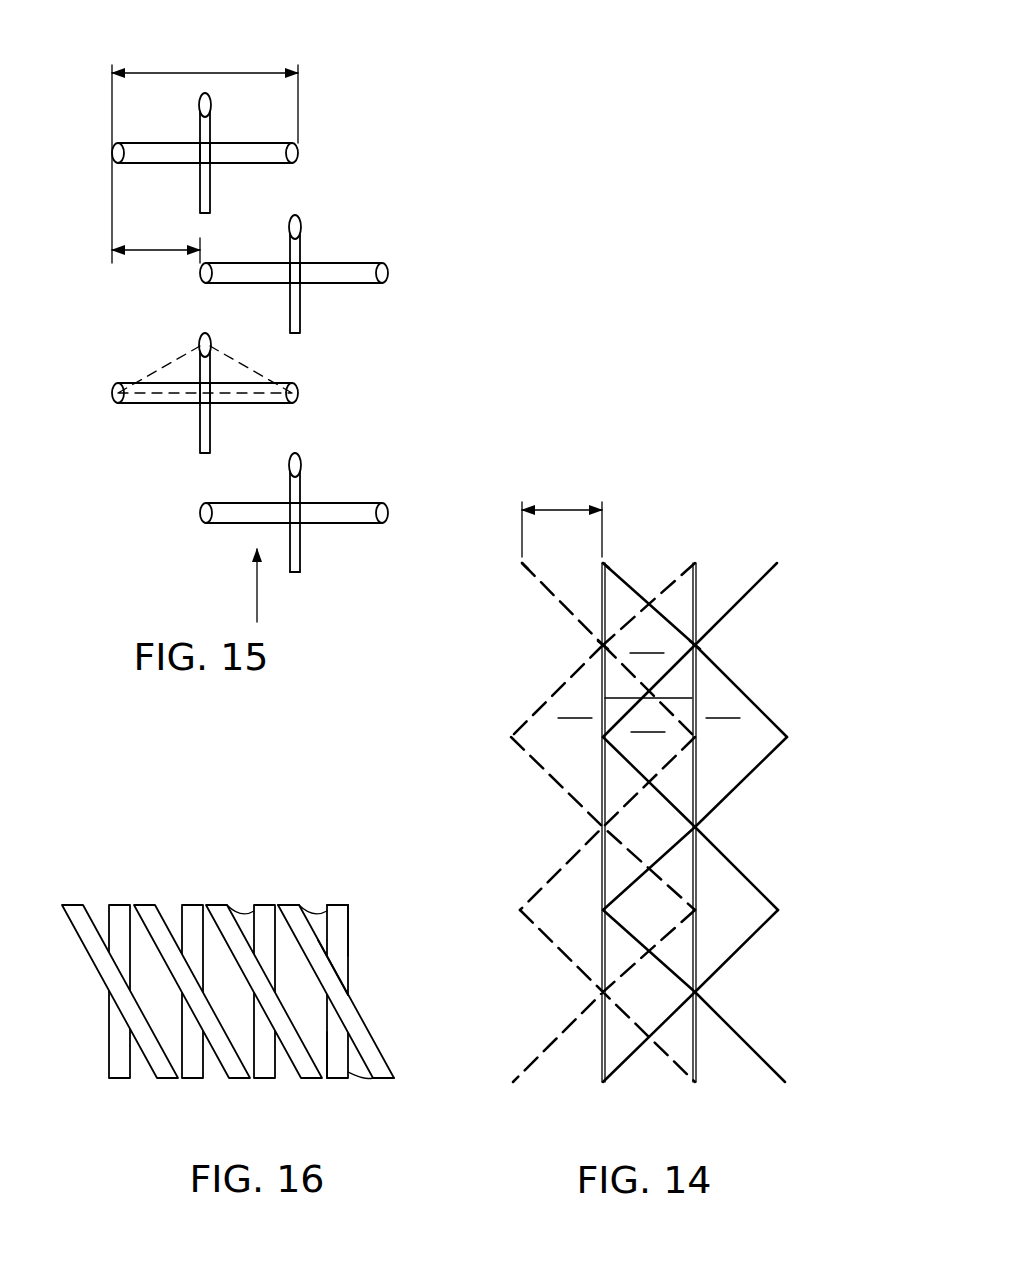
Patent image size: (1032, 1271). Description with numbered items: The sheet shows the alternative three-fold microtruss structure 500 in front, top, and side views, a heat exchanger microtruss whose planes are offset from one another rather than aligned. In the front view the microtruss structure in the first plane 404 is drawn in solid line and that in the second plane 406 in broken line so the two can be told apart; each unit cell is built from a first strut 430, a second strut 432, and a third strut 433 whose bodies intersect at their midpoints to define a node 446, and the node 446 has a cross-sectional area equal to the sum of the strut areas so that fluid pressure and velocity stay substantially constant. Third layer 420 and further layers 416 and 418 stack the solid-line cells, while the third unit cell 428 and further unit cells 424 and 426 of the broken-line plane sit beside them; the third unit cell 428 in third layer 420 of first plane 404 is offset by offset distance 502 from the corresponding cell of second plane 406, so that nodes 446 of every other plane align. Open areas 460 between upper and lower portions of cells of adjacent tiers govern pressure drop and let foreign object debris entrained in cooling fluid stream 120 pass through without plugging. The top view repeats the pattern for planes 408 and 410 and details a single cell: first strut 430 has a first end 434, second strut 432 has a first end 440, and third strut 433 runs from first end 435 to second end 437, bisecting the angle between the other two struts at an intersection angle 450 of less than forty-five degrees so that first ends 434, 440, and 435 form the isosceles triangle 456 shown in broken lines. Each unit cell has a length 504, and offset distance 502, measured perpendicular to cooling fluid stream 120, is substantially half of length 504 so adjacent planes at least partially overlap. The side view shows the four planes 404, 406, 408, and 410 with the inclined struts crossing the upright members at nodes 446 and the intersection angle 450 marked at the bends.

In FIG. 15, the cooling fluid stream 120 is at (256, 590).
In FIG. 15, the first plane 404 is at (291, 510).
In FIG. 16, the first plane 404 is at (358, 963).
In FIG. 14, the first plane 404 is at (654, 785).
In FIG. 15, the second plane 406 is at (184, 379).
In FIG. 16, the second plane 406 is at (264, 904).
In FIG. 14, the second plane 406 is at (615, 802).
In FIG. 15, the plane 408 is at (342, 244).
In FIG. 16, the plane 408 is at (193, 904).
In FIG. 15, the plane 410 is at (92, 150).
In FIG. 16, the plane 410 is at (120, 904).
In FIG. 14, the third tier 416 is at (730, 992).
In FIG. 14, the second tier 418 is at (730, 828).
In FIG. 14, the third layer 420 is at (737, 647).
In FIG. 14, the sixth tier 424 is at (570, 980).
In FIG. 14, the fifth tier 426 is at (560, 816).
In FIG. 14, the third unit cell 428 is at (556, 655).
In FIG. 15, the first strut 430 is at (276, 524).
In FIG. 16, the first strut 430 is at (348, 936).
In FIG. 14, the first strut 430 is at (620, 581).
In FIG. 15, the second strut 432 is at (348, 524).
In FIG. 16, the second strut 432 is at (336, 1071).
In FIG. 14, the second strut 432 is at (681, 573).
In FIG. 15, the third strut 433 is at (300, 553).
In FIG. 14, the third strut 433 is at (699, 580).
In FIG. 15, the first end 434 is at (199, 513).
In FIG. 16, the first end 434 is at (343, 904).
In FIG. 14, the first end 434 is at (606, 562).
In FIG. 15, the first end 435 is at (290, 462).
In FIG. 16, the first end 435 is at (287, 902).
In FIG. 14, the first end 435 is at (601, 565).
In FIG. 15, the second end 437 is at (300, 573).
In FIG. 16, the second end 437 is at (389, 1079).
In FIG. 15, the first end 440 is at (389, 512).
In FIG. 15, the node 446 is at (207, 165).
In FIG. 16, the node 446 is at (352, 985).
In FIG. 14, the node 446 is at (698, 645).
In FIG. 16, the second intersection angle 450 is at (246, 905).
In FIG. 15, the isosceles triangle 456 is at (232, 362).
In FIG. 14, the open area 460 is at (649, 683).
In FIG. 15, the microtruss structure 500 is at (356, 130).
In FIG. 16, the microtruss structure 500 is at (85, 880).
In FIG. 14, the microtruss structure 500 is at (790, 540).
In FIG. 15, the offset distance 502 is at (155, 250).
In FIG. 14, the offset distance 502 is at (563, 510).
In FIG. 15, the unit cell length 504 is at (198, 73).